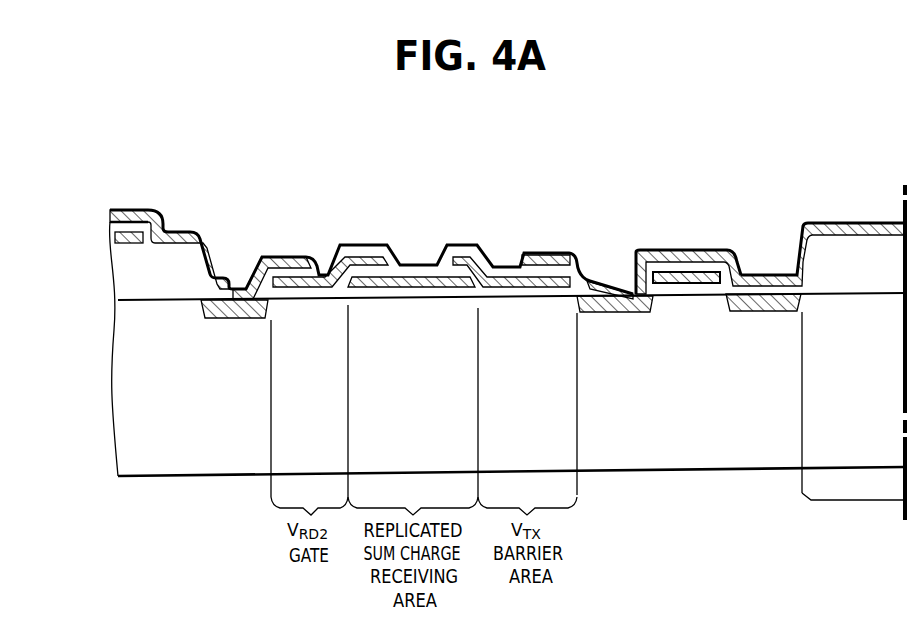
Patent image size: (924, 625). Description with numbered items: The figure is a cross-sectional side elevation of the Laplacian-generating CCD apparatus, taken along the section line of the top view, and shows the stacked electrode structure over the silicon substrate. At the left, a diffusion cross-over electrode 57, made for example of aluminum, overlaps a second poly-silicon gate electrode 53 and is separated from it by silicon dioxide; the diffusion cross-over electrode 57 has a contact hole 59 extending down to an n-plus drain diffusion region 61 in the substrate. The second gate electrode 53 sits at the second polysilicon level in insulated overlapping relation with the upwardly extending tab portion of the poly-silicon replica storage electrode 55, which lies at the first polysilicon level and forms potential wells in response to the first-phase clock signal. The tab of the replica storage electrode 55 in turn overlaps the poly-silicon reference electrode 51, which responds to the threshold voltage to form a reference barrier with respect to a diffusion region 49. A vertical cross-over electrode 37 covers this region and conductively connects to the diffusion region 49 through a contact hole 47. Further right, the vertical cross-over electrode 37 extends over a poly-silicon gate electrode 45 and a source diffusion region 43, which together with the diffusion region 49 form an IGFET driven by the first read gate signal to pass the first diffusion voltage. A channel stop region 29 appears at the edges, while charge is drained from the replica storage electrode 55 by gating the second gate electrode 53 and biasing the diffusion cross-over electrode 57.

The channel stop region 29 is at (125, 272).
The vertical cross-over electrode 37 is at (548, 257).
The source diffusion region 43 is at (762, 300).
The poly-silicon gate electrode 45 is at (680, 278).
The contact hole 47 is at (616, 280).
The diffusion region 49 is at (600, 302).
The poly-silicon reference electrode 51 is at (497, 278).
The second poly-silicon gate electrode 53 is at (364, 259).
The poly-silicon replica storage electrode 55 is at (116, 238).
The diffusion cross-over electrode 57 is at (288, 258).
The contact hole 59 is at (236, 285).
The n+ drain diffusion region 61 is at (203, 309).